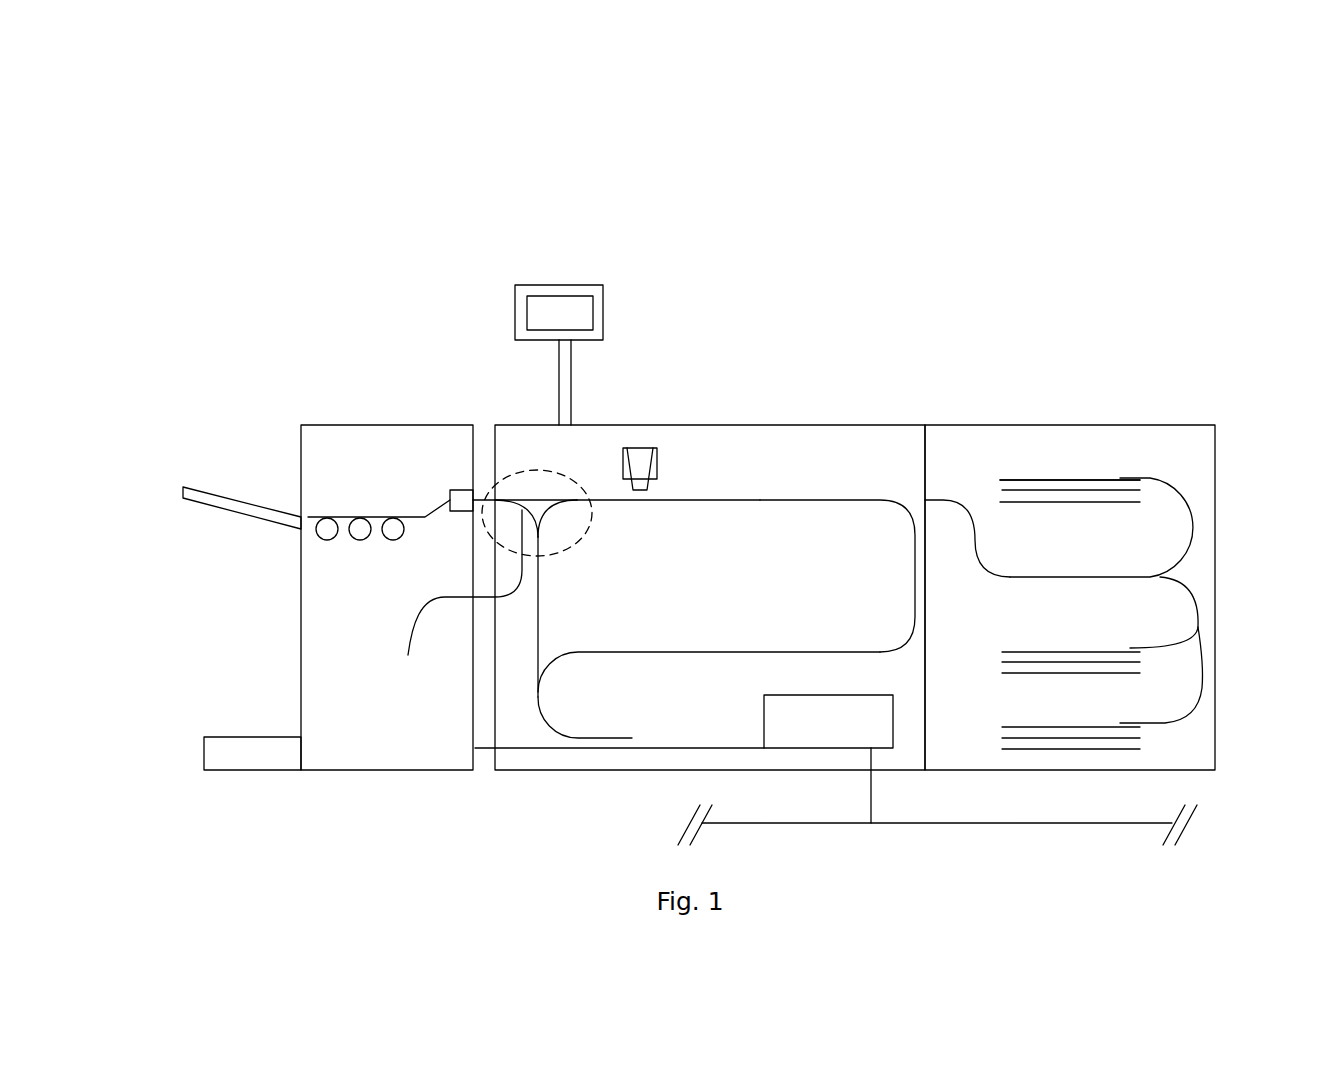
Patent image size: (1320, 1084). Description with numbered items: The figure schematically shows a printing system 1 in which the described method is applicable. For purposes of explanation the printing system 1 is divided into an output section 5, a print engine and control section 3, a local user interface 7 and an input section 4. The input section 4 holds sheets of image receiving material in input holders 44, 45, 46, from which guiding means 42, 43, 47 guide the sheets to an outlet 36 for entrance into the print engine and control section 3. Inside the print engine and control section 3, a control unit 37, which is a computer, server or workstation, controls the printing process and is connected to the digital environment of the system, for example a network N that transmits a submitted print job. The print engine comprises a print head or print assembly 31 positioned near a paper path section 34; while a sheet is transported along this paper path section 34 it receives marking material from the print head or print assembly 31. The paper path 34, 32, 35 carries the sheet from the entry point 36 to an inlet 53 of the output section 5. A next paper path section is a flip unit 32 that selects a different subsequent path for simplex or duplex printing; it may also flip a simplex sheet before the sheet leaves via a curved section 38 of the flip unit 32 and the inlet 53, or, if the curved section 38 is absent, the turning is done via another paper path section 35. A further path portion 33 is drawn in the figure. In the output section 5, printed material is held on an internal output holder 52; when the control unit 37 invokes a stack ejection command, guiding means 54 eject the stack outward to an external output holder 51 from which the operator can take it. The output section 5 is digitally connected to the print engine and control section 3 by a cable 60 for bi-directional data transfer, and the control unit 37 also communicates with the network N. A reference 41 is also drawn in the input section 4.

The printing system 1 is at (380, 193).
The print engine and control section 3 is at (522, 437).
The input section 4 is at (977, 433).
The output section 5 is at (360, 437).
The local user interface 7 is at (522, 290).
The print head or print assembly 31 is at (627, 447).
The flip unit 32 is at (570, 547).
The transport path 33 is at (712, 500).
The paper path section 34 is at (832, 502).
The paper path section 35 is at (800, 652).
The entry point 36 is at (923, 502).
The control unit 37 is at (783, 717).
The curved section 38 is at (457, 598).
The output holder 41 is at (1013, 480).
The guiding means 42 is at (1202, 522).
The guiding means 43 is at (1195, 605).
The input holder 44 is at (1002, 650).
The input holder 45 is at (1010, 737).
The input holder 46 is at (1010, 483).
The guiding means 47 is at (1200, 688).
The external output holder 51 is at (222, 499).
The output holder 52 is at (413, 522).
The inlet 53 is at (463, 488).
The guiding means 54 is at (326, 536).
The cable 60 is at (478, 750).
The network N is at (992, 824).